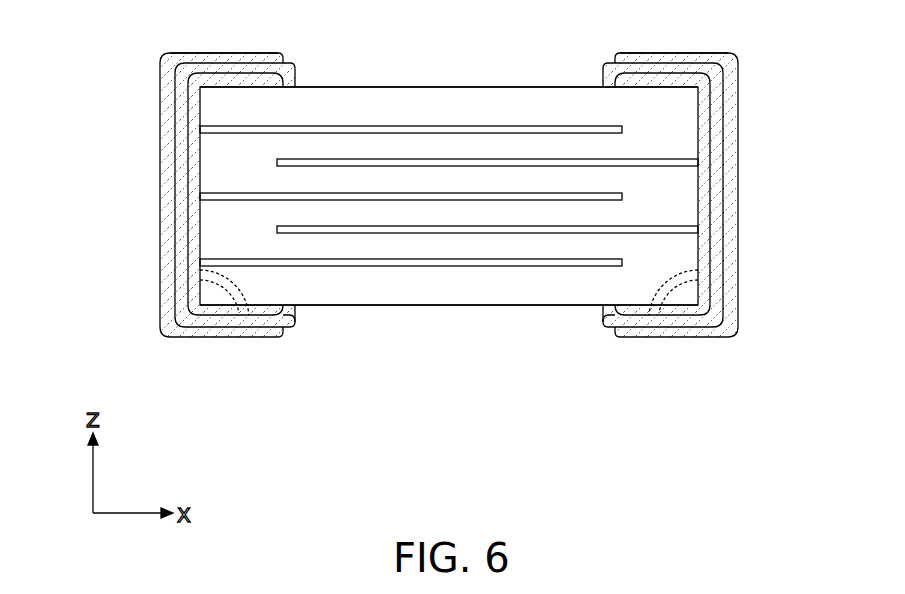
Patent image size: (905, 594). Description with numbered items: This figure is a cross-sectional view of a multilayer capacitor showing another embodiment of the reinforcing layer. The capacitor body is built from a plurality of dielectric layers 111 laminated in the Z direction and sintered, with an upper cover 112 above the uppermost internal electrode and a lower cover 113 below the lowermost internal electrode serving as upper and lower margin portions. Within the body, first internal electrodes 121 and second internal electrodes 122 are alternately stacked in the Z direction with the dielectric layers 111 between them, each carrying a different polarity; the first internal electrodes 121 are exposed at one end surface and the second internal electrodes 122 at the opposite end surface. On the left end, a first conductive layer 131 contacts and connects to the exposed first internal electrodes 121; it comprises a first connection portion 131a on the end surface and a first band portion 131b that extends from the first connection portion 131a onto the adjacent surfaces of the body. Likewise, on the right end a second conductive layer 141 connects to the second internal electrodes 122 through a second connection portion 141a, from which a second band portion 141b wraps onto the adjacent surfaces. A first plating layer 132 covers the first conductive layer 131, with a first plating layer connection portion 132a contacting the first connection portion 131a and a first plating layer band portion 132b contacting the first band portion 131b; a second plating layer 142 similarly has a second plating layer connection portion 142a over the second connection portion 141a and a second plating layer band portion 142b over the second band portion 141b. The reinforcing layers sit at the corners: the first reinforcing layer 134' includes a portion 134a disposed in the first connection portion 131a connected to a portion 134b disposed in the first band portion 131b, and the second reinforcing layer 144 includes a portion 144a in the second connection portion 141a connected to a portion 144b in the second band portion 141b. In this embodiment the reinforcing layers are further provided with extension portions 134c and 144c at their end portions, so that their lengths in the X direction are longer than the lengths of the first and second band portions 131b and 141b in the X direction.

The dielectric layer 111 is at (632, 198).
The upper cover 112 is at (490, 105).
The lower cover 113 is at (470, 293).
The first internal electrode 121 is at (376, 125).
The second internal electrode 122 is at (560, 160).
The first conductive layer 131 is at (160, 195).
The first connection portion 131a is at (180, 229).
The first band portion 131b is at (175, 292).
The first plating layer 132 is at (150, 181).
The first plating layer connection portion 132a is at (160, 107).
The first plating layer band portion 132b is at (223, 58).
The first reinforcing layer 134' is at (302, 350).
The portion of first reinforcing layer disposed in first connection portion 134a is at (228, 278).
The portion of first reinforcing layer disposed in first band portion 134b is at (247, 308).
The extension portion 134c is at (343, 350).
The second conductive layer 141 is at (743, 195).
The second connection portion 141a is at (712, 231).
The second band portion 141b is at (723, 289).
The second plating layer 142 is at (749, 181).
The second plating layer connection portion 142a is at (738, 110).
The second plating layer band portion 142b is at (675, 58).
The second reinforcing layer 144 is at (599, 350).
The portion of second reinforcing layer disposed in second connection portion 144a is at (670, 278).
The portion of second reinforcing layer disposed in second band portion 144b is at (651, 308).
The extension portion 144c is at (557, 350).